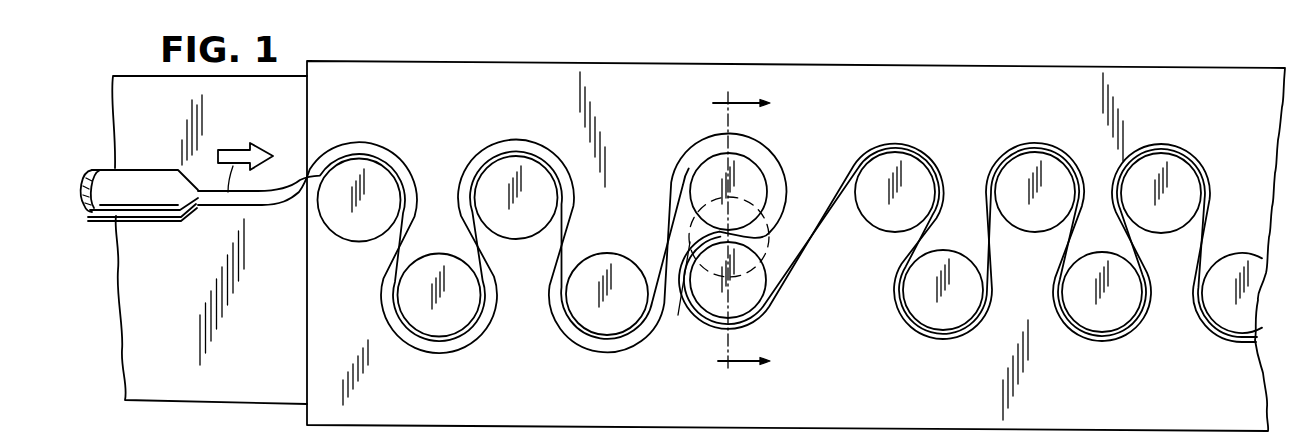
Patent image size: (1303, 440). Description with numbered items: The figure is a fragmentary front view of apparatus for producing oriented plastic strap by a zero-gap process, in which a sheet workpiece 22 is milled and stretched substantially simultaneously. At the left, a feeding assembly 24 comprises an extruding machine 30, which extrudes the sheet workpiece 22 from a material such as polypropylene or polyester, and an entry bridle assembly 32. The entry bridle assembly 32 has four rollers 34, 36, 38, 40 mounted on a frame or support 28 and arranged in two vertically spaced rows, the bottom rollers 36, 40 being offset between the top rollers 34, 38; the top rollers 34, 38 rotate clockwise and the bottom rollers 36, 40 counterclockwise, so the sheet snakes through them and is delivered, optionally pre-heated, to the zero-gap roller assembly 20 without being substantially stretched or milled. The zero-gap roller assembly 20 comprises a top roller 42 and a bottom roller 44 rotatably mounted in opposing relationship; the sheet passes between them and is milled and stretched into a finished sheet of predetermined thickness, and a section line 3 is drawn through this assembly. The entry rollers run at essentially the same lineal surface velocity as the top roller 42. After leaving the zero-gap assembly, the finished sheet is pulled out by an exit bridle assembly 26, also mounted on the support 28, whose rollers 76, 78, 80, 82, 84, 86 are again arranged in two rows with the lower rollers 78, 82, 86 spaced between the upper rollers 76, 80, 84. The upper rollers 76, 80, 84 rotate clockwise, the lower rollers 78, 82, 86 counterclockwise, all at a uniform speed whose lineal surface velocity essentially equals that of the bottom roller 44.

The zero-gap roller assembly 20 is at (763, 211).
The sheet workpiece 22 is at (518, 142).
The feeding assembly 24 is at (137, 82).
The exit bridle assembly 26 is at (1039, 144).
The frame or support 28 is at (1053, 264).
The extruding machine 30 is at (150, 167).
The entry bridle assembly 32 is at (483, 266).
The roller 34 is at (343, 233).
The roller 36 is at (432, 262).
The roller 38 is at (522, 222).
The roller 40 is at (608, 267).
The top roller 42 is at (757, 178).
The bottom roller 44 is at (758, 295).
The section line 3- 3 is at (735, 235).
The roller 76 is at (887, 217).
The roller 78 is at (952, 257).
The roller 80 is at (1040, 233).
The roller 82 is at (1107, 265).
The roller 84 is at (1170, 225).
The roller 86 is at (1238, 263).